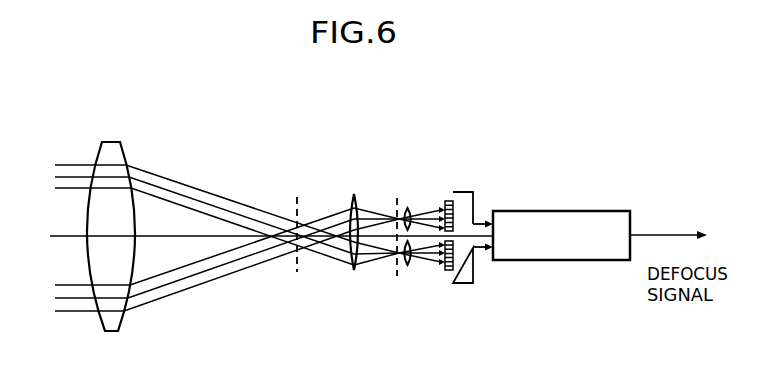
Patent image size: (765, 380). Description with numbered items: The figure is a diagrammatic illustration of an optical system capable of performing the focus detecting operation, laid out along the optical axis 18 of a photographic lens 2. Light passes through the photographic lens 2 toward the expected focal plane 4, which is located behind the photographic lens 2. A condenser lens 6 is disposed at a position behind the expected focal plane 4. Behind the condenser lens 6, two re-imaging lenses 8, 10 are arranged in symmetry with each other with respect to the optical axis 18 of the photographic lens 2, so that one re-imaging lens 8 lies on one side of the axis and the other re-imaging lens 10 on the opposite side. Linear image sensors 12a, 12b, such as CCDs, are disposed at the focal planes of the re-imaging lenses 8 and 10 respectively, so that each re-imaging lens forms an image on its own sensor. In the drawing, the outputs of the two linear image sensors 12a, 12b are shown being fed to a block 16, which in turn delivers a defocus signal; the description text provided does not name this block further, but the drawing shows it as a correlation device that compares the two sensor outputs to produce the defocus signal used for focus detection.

The photographic lens 2 is at (110, 331).
The expected focal plane 4 is at (295, 270).
The condenser lens 6 is at (353, 270).
The re-imaging lens 8 is at (409, 206).
The re-imaging lens 10 is at (407, 267).
The linear image sensor 12a is at (447, 200).
The linear image sensor 12b is at (447, 271).
The correlation device 16 is at (553, 211).
The optical axis 18 is at (67, 238).